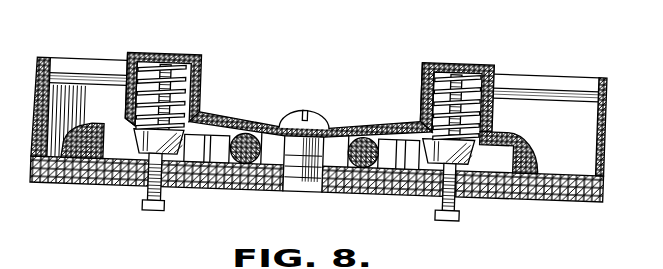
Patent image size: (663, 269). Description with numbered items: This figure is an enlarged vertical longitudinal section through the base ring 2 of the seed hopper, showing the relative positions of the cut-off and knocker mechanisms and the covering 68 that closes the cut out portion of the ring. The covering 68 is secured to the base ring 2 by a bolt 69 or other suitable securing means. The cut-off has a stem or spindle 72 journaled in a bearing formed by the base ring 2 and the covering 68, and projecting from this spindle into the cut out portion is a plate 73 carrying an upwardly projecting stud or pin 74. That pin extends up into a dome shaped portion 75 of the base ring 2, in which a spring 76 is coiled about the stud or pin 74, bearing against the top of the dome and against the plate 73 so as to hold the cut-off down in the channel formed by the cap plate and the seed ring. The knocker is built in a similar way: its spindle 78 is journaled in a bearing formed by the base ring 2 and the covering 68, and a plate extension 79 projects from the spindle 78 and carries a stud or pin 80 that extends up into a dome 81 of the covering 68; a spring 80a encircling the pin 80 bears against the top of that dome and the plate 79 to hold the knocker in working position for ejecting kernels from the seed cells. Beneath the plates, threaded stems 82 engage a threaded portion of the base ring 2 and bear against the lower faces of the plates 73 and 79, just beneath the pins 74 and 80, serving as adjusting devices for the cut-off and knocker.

The base ring 2 is at (72, 182).
The covering 68 is at (532, 121).
The bolt 69 is at (317, 108).
The stem or spindle 72 is at (272, 116).
The plate 73 is at (187, 182).
The stud or pin 74 is at (123, 100).
The dome shaped portion 75 is at (191, 49).
The spring 76 is at (158, 57).
The spindle 78 is at (355, 156).
The plate extension 79 is at (410, 140).
The stud or pin 80 is at (418, 95).
The spring 80a is at (490, 61).
The dome 81 is at (462, 48).
The threaded stems 82 is at (143, 199).